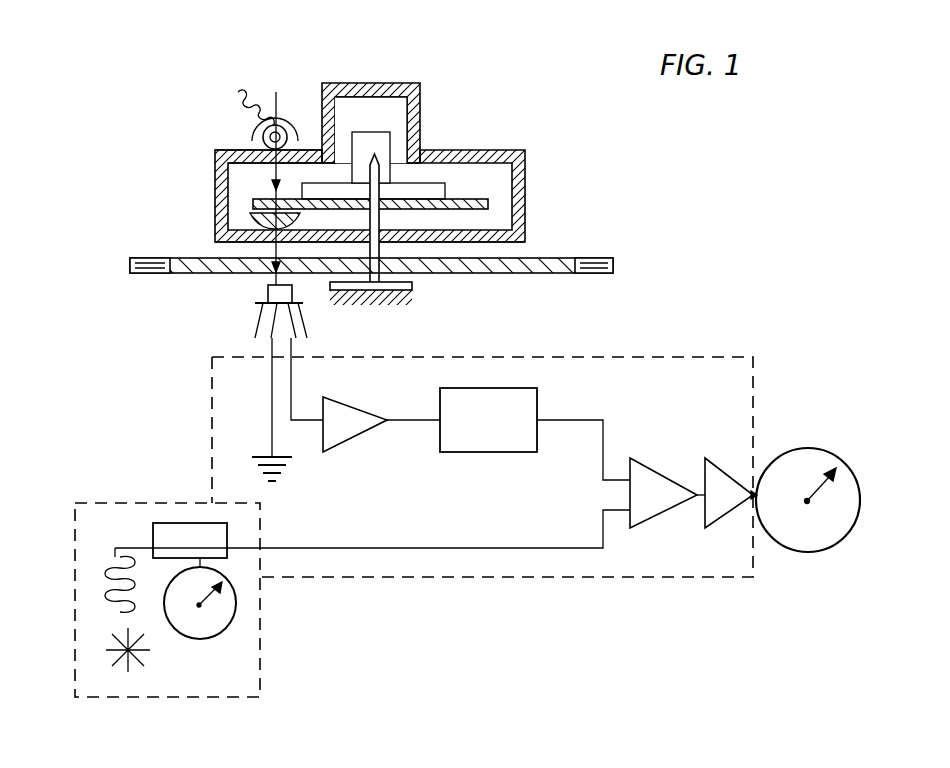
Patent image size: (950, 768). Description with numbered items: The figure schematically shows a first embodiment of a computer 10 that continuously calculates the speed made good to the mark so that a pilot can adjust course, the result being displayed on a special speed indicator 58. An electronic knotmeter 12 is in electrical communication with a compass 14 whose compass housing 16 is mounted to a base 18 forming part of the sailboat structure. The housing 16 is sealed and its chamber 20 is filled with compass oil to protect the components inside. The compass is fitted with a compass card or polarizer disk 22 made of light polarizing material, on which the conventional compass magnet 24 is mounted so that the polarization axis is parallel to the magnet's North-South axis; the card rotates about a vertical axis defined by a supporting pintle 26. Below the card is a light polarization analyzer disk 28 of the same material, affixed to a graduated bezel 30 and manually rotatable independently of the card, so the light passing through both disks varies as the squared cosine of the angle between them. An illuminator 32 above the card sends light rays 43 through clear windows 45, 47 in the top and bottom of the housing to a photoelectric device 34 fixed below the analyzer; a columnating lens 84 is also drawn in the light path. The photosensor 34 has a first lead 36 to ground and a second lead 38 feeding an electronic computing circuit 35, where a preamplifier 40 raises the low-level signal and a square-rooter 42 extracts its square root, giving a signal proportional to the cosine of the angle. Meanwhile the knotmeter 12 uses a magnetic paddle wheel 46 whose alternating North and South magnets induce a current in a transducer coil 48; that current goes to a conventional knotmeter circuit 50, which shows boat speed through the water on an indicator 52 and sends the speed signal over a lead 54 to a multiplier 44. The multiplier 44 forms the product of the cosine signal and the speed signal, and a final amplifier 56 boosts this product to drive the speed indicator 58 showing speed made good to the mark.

The computer 10 is at (650, 182).
The knotmeter 12 is at (261, 623).
The compass 14 is at (385, 83).
The compass housing 16 is at (528, 223).
The base 18 is at (405, 299).
The chamber 20 is at (405, 113).
The compass card or polarizer disk 22 is at (516, 176).
The compass magnet 24 is at (330, 185).
The pintle 26 is at (383, 279).
The analyzer disk 28 is at (550, 274).
The graduated bezel 30 is at (146, 273).
The illuminator 32 is at (258, 128).
The photoelectric device 34 is at (268, 291).
The electronic computing circuit 35 is at (711, 356).
The first lead 36 is at (272, 401).
The second lead 38 is at (292, 361).
The preamplifier 40 is at (342, 439).
The square-rooter 42 is at (484, 453).
The light rays 43 is at (275, 165).
The multiplier 44 is at (652, 476).
The clear window 45 is at (250, 152).
The magnetic paddle wheel 46 is at (168, 673).
The clear window 47 is at (262, 244).
The transducer coil 48 is at (118, 577).
The knotmeter circuit 50 is at (163, 523).
The indicator 52 is at (224, 628).
The lead 54 is at (378, 548).
The final amplifier 56 is at (710, 523).
The speed indicator 58 is at (802, 451).
The columnating lens 84 is at (253, 220).